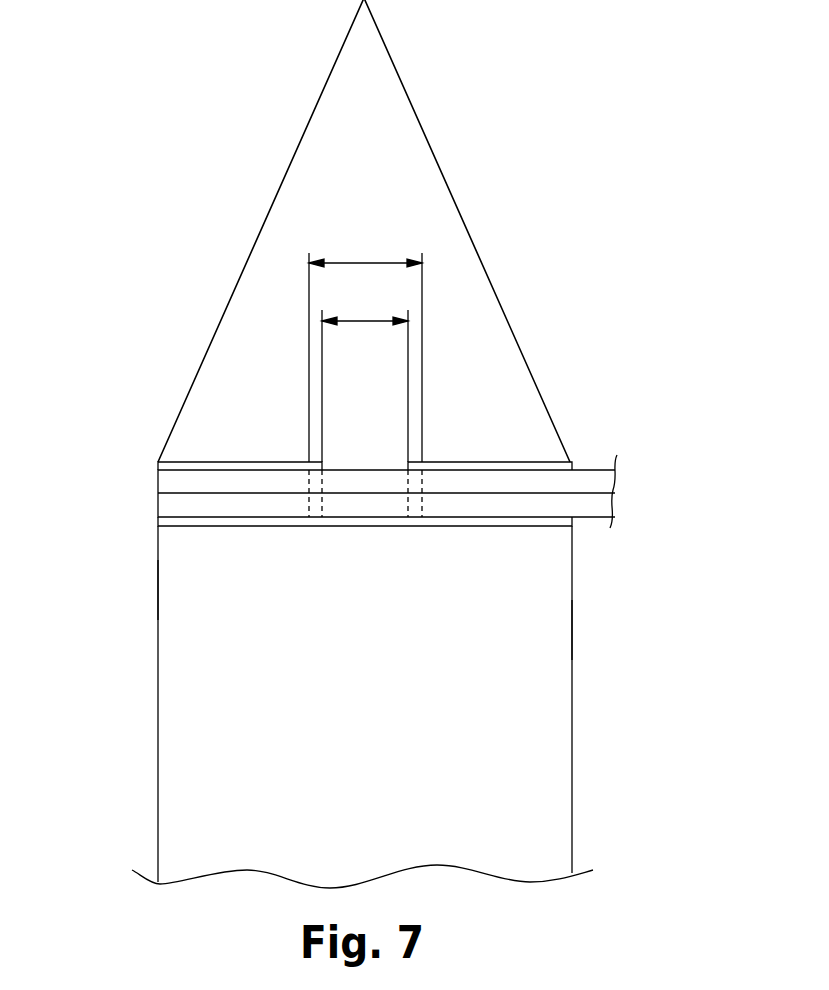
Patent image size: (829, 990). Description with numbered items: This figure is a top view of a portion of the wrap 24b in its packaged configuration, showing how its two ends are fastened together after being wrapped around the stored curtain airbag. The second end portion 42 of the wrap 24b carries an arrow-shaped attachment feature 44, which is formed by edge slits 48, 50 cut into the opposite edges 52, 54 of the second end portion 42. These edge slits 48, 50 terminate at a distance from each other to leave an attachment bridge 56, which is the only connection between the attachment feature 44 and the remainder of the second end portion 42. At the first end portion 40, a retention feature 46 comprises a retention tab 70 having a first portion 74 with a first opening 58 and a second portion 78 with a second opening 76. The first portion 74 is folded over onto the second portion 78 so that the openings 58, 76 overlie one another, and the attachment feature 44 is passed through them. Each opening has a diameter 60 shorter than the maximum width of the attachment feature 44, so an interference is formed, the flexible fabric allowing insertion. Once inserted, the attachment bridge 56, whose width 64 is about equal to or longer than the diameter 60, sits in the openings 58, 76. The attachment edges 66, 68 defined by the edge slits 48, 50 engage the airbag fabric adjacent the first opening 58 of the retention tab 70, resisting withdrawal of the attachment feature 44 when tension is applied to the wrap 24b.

The wrap 24b is at (195, 647).
The first end portion 40 is at (170, 483).
The second end portion 42 is at (545, 690).
The attachment feature 44 is at (321, 167).
The retention feature 46 is at (302, 507).
The edge slit 48 is at (155, 525).
The edge slit 50 is at (568, 524).
The edge 52 is at (158, 583).
The edge 54 is at (573, 617).
The attachment bridge 56 is at (393, 482).
The first opening 58 is at (372, 470).
The diameter 60 is at (365, 349).
The width 64 is at (365, 378).
The attachment edge 66 is at (265, 462).
The attachment edge 68 is at (478, 462).
The retention tab 70 is at (163, 505).
The first portion 74 is at (588, 480).
The second opening 76 is at (373, 517).
The second portion 78 is at (598, 505).